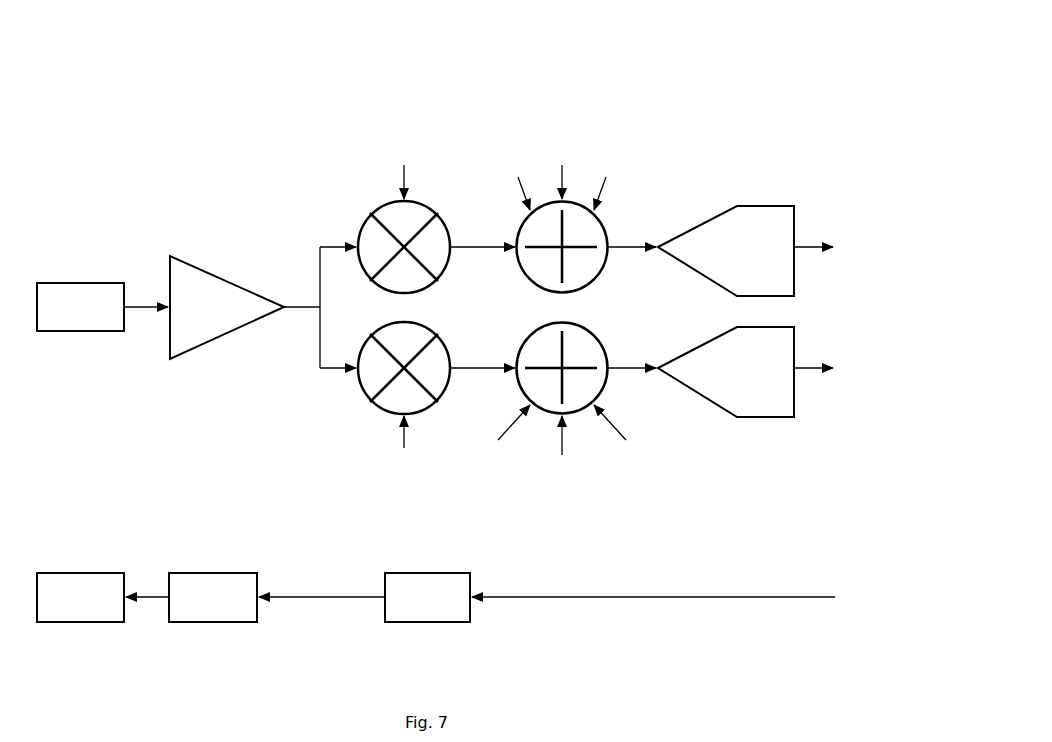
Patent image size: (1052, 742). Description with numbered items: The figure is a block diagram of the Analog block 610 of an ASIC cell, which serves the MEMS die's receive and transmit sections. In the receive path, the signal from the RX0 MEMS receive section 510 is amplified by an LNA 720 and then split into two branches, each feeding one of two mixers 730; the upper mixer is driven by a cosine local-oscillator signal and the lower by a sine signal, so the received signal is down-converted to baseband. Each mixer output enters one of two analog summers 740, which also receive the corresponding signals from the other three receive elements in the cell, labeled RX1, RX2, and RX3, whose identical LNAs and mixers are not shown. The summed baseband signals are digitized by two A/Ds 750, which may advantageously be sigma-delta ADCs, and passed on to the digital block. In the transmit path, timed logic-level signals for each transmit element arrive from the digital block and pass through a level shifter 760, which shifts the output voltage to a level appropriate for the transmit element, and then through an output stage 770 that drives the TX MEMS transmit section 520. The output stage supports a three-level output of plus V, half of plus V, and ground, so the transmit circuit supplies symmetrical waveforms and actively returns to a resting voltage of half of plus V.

The Analog block 610 is at (490, 61).
The receive section 510 is at (76, 278).
The transmit section 520 is at (74, 573).
The LNA 720 is at (212, 278).
The mixer 730 is at (382, 208).
The analog summer 740 is at (602, 222).
The A/D 750 is at (770, 206).
The level shifter 760 is at (470, 622).
The output stage 770 is at (240, 622).